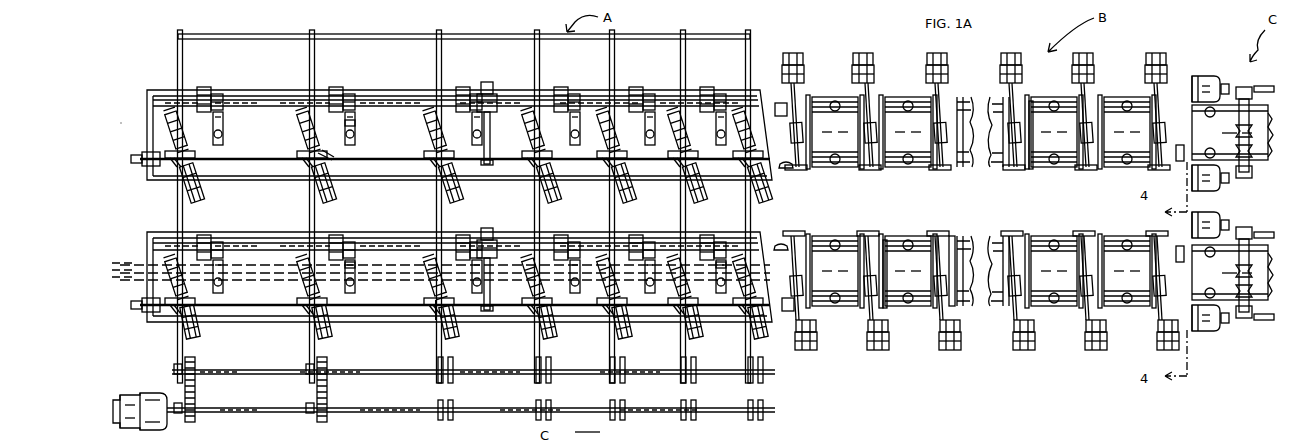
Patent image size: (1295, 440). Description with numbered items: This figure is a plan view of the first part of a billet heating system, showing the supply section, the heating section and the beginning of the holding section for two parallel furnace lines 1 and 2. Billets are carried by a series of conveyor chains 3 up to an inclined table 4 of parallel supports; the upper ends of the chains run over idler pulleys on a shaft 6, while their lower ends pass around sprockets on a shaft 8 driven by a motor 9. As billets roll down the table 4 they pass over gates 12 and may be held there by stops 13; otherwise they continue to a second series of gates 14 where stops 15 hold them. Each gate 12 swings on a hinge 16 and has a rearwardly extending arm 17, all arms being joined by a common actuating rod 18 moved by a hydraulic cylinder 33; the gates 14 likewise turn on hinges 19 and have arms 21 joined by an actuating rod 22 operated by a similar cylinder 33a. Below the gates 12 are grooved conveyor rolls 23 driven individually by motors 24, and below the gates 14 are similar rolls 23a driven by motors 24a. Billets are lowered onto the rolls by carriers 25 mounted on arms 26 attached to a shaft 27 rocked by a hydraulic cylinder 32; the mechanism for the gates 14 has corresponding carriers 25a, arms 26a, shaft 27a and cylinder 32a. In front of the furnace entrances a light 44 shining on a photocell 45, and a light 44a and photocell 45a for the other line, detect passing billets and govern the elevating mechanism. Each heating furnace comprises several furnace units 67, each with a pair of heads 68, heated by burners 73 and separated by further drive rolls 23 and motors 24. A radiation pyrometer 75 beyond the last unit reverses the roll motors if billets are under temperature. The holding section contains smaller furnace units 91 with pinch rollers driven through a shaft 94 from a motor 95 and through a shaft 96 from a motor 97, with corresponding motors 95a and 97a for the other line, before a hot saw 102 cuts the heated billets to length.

The furnace line 1 is at (702, 130).
The furnace line 2 is at (698, 271).
The conveyor chains 3 is at (312, 388).
The inclined table 4 is at (310, 203).
The shaft 6 is at (500, 372).
The shaft 8 is at (386, 412).
The motor 9 is at (138, 396).
The gate 12 is at (198, 294).
The stop 13 is at (336, 238).
The gate 14 is at (176, 124).
The stop 15 is at (461, 92).
The hinge 16 is at (436, 296).
The arm 17 is at (434, 308).
The actuating rod 18 is at (380, 308).
The hinge 19 is at (308, 153).
The arm 21 is at (340, 153).
The actuating rod 22 is at (262, 158).
The conveyor roll 23 is at (316, 272).
The conveyor roll 23a is at (434, 140).
The motor 24 is at (456, 326).
The motor 24a is at (458, 184).
The carrier 25 is at (350, 286).
The carrier 25a is at (352, 134).
The arm 26 is at (350, 258).
The arm 26a is at (352, 117).
The shaft 27 is at (234, 242).
The shaft 27a is at (247, 97).
The cylinder 32 is at (492, 290).
The cylinder 32a is at (490, 136).
The hydraulic cylinder 33 is at (140, 304).
The hydraulic cylinder 33a is at (141, 160).
The light 44 is at (780, 244).
The light 44a is at (786, 170).
The photocell 45 is at (788, 314).
The photocell 45a is at (780, 102).
The furnace unit 67 is at (896, 240).
The head 68 is at (958, 240).
The burner 73 is at (905, 167).
The radiation pyrometer 75 is at (1180, 144).
The furnace unit 91 is at (1218, 118).
The shaft 94 is at (1268, 322).
The motor 95 is at (1198, 332).
The motor 95a is at (1208, 186).
The shaft 96 is at (1266, 230).
The motor 97 is at (1206, 214).
The motor 97a is at (1208, 76).
The hot saw 102 is at (590, 434).